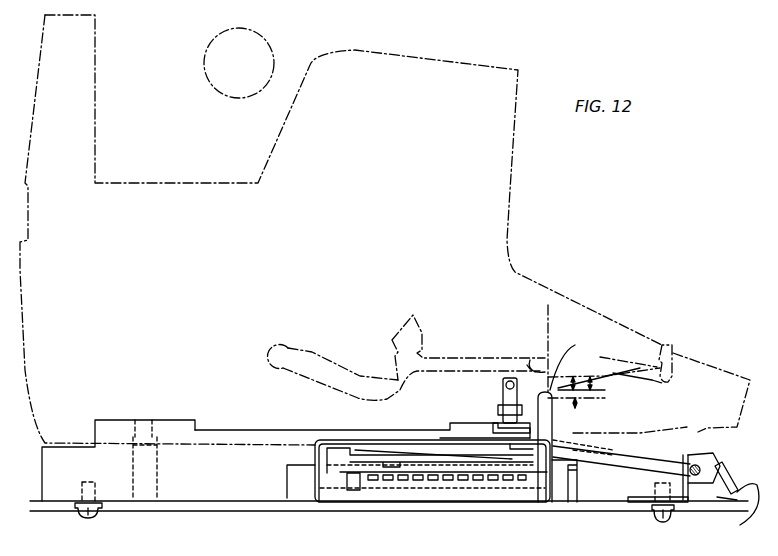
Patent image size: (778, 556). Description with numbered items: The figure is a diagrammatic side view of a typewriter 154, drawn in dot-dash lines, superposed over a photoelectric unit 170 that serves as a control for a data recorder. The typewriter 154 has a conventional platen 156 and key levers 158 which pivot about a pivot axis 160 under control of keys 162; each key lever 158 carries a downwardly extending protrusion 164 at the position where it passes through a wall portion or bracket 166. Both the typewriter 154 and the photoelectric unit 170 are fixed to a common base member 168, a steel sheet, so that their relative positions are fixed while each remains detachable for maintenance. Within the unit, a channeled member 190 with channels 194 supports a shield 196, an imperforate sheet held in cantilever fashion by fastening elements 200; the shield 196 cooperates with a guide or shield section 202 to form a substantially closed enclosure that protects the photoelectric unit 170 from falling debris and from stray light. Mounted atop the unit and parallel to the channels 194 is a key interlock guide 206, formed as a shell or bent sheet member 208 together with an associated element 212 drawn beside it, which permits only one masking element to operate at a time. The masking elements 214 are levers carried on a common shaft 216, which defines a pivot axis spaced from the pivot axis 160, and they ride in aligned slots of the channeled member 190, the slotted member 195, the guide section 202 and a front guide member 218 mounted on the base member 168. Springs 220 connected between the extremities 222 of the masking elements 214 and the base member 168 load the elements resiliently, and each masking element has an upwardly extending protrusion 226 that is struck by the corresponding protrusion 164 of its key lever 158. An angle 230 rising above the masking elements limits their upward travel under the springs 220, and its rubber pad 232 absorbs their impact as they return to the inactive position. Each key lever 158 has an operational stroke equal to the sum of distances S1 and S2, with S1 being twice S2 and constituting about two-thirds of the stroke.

The typewriter 154 is at (518, 224).
The platen 156 is at (268, 42).
The key levers 158 is at (483, 356).
The pivot axis 160 is at (283, 340).
The keys 162 is at (672, 341).
The downwardly extending protrusions 164 is at (524, 357).
The wall portion or bracket 166 is at (553, 313).
The base member 168 is at (515, 504).
The photoelectric unit 170 is at (458, 422).
The channeled member 190 is at (448, 495).
The channels 194 is at (388, 478).
The slotted member 195 is at (472, 481).
The shield 196 is at (325, 440).
The fastening elements 200 is at (315, 490).
The guide or shield section 202 is at (577, 470).
The key interlock guide 206 is at (574, 358).
The shell or bent sheet member 208 is at (506, 385).
The nut 212 is at (503, 396).
The masking elements 214 is at (620, 452).
The common shaft 216 is at (696, 464).
The front guide member 218 is at (692, 491).
The springs 220 is at (752, 512).
The extremities 222 is at (722, 456).
The upwardly extending protrusion 226 is at (560, 408).
The angle 230 is at (337, 442).
The rubber pad 232 is at (388, 442).
The distance S1 is at (591, 381).
The distance S2 is at (596, 400).